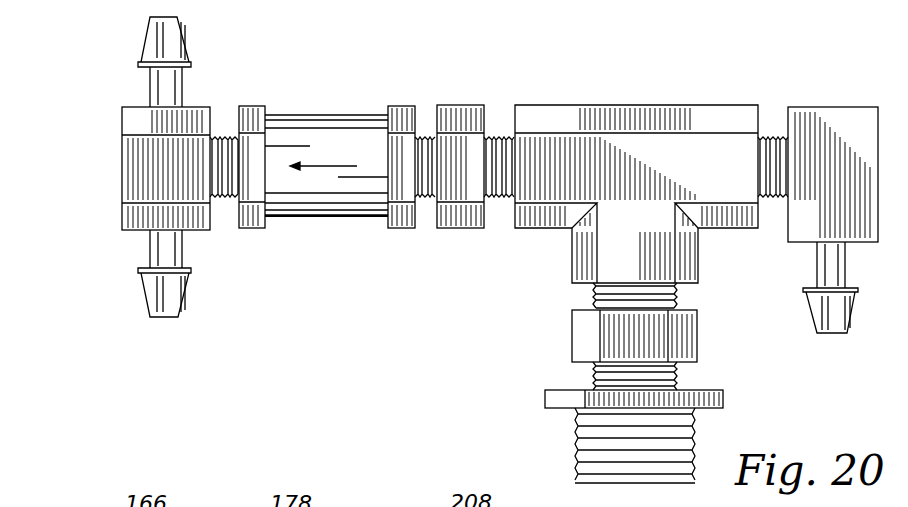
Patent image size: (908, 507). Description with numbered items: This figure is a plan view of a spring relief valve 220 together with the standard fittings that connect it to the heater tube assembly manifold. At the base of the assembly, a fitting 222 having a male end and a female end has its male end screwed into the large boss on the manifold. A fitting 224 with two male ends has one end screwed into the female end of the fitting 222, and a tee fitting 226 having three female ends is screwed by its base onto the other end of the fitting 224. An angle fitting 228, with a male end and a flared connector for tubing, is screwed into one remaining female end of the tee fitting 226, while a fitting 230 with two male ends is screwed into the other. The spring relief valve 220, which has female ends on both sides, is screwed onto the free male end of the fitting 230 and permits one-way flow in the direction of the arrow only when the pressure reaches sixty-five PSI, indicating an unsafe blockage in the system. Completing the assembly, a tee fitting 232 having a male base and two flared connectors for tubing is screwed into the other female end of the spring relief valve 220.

The spring relief valve 220 is at (319, 214).
The fitting 222 is at (737, 382).
The fitting 224 is at (700, 327).
The tee fitting 226 is at (660, 105).
The angle fitting 228 is at (839, 107).
The fitting 230 is at (470, 105).
The tee fitting 232 is at (121, 160).